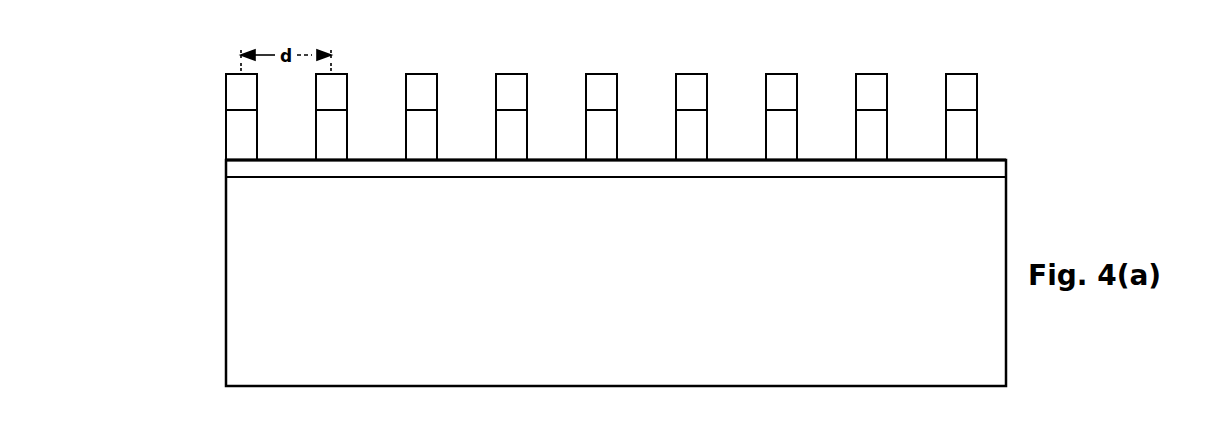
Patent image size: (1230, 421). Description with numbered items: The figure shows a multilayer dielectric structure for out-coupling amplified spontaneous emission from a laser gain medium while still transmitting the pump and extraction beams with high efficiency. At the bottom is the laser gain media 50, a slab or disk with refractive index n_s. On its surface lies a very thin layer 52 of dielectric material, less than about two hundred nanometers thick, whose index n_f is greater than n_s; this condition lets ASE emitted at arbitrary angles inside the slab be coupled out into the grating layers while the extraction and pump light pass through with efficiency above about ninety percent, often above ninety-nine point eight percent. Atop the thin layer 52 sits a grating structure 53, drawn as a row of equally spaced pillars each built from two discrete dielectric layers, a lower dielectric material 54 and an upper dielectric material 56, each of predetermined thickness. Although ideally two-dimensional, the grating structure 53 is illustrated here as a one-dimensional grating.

The laser gain media 50 is at (262, 258).
The thin layer 52 is at (237, 172).
The grating structure 53 is at (963, 74).
The dielectric material 54 is at (231, 143).
The dielectric material 56 is at (231, 106).